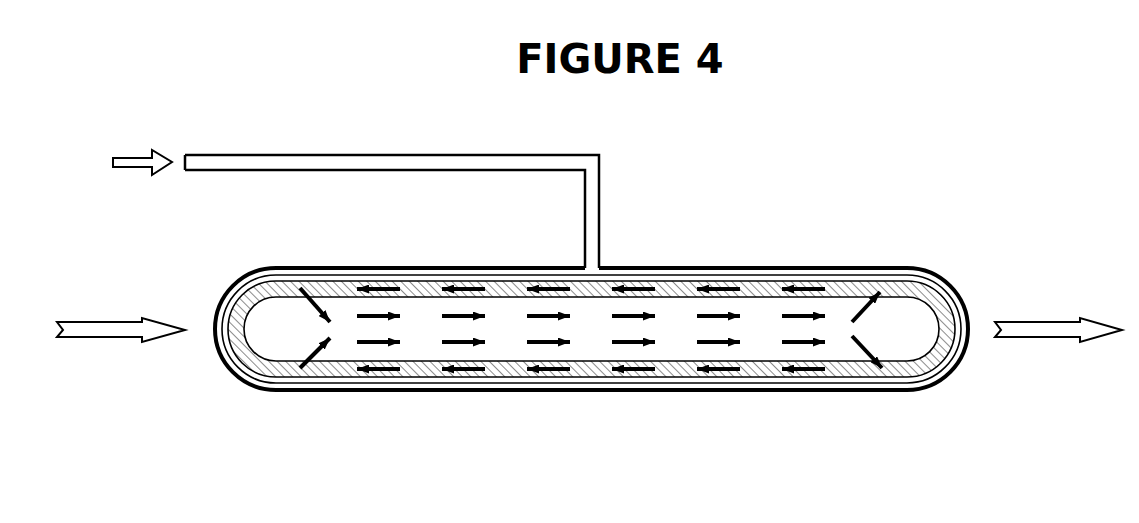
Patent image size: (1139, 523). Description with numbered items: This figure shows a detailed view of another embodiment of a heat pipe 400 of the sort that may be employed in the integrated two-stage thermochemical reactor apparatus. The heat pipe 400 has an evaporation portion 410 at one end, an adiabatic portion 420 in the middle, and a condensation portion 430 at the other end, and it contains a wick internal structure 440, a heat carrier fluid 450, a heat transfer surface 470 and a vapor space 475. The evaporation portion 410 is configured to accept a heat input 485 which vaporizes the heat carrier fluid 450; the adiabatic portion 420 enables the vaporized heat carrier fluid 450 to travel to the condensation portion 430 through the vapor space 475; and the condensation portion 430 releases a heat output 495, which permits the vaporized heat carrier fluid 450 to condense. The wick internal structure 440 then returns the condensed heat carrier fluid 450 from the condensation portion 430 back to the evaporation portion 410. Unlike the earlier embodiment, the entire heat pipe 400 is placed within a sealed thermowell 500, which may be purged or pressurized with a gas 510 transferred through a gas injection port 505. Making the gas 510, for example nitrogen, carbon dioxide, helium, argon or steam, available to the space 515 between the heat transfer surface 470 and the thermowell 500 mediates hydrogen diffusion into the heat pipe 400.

The heat pipe 400 is at (322, 280).
The evaporation portion 410 is at (253, 287).
The adiabatic portion 420 is at (398, 393).
The condensation portion 430 is at (935, 282).
The wick internal structure 440 is at (626, 290).
The heat carrier fluid 450 is at (322, 340).
The heat transfer surface 470 is at (785, 278).
The vapor space 475 is at (830, 330).
The heat input 485 is at (98, 322).
The heat output 495 is at (1037, 323).
The sealed thermowell 500 is at (465, 267).
The gas injection port 505 is at (233, 166).
The gas 510 is at (131, 167).
The space 515 is at (397, 275).